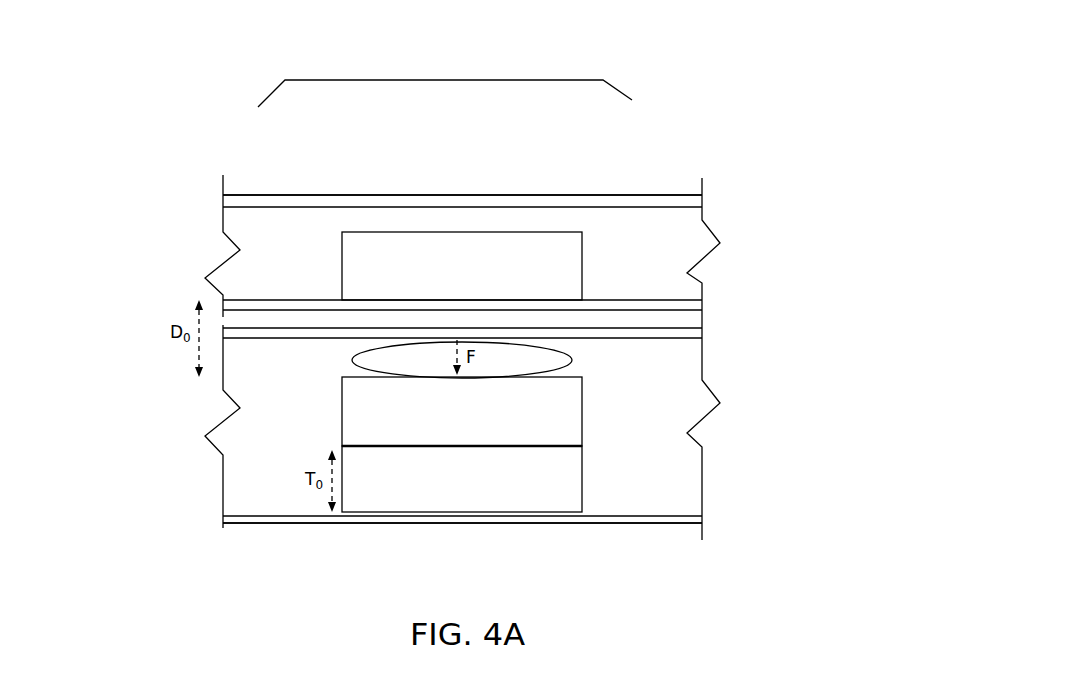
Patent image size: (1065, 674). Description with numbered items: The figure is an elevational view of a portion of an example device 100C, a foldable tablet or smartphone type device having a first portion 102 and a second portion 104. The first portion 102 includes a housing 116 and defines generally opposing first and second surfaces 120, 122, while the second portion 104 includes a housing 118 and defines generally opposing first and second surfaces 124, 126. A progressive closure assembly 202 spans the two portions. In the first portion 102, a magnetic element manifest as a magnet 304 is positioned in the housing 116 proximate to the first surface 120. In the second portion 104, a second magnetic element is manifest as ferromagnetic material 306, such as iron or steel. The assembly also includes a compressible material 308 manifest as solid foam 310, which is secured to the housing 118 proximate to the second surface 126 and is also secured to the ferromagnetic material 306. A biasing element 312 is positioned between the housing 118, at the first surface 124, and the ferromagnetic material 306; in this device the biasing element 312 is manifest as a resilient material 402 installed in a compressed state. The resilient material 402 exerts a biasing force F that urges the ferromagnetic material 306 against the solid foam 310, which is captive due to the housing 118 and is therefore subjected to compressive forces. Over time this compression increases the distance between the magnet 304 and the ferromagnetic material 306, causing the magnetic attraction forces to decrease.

The device 100C is at (196, 46).
The progressive closure assembly 202 is at (420, 80).
The first portion 102 is at (481, 232).
The housing 116 is at (222, 202).
The second surface 122 is at (683, 193).
The first surface 120 is at (693, 311).
The magnet 304 is at (520, 276).
The second portion 104 is at (439, 470).
The first surface 124 is at (473, 328).
The housing 118 is at (675, 523).
The second surface 126 is at (311, 536).
The biasing element 312 is at (615, 397).
The resilient material 402 is at (572, 360).
The ferromagnetic material 306 is at (530, 437).
The compressible material 308 is at (492, 517).
The solid foam 310 is at (462, 479).